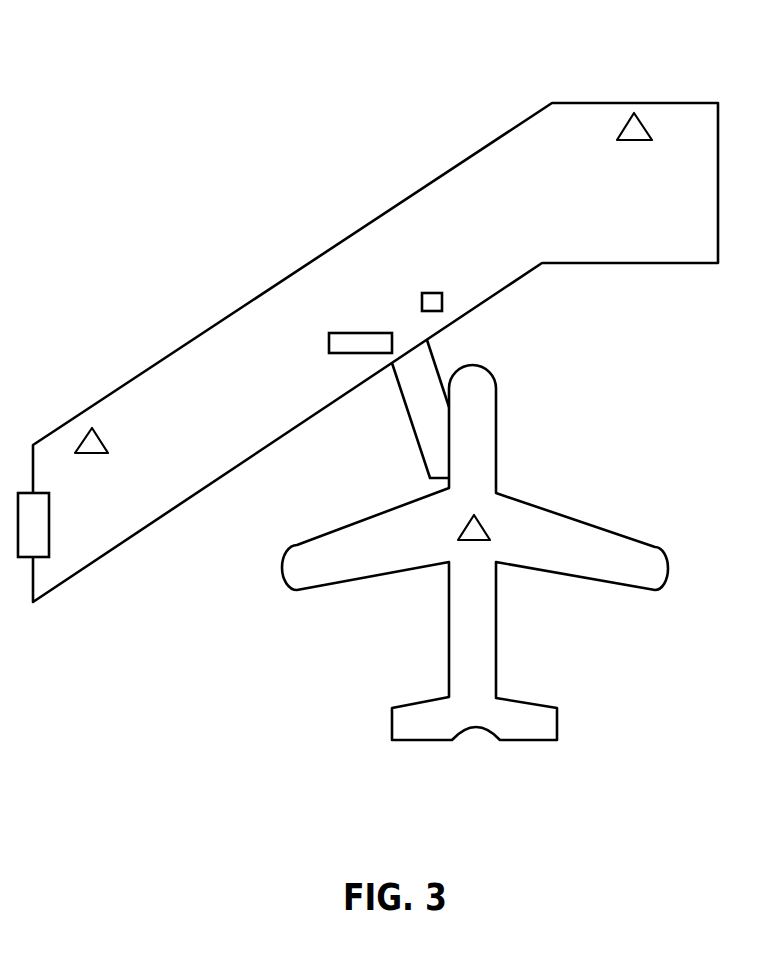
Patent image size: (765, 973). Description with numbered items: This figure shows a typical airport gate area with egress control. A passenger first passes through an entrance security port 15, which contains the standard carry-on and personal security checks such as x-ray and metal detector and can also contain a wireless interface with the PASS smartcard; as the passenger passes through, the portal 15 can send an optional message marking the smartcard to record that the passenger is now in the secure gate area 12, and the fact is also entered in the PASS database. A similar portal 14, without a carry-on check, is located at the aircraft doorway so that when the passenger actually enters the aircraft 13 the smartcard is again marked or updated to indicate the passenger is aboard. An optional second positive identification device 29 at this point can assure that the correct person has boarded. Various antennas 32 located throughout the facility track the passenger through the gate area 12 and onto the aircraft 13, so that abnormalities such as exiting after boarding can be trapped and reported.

The gate area 12 is at (142, 408).
The aircraft 13 is at (483, 415).
The portal 14 is at (352, 328).
The entrance security port 15 is at (55, 510).
The second positive identification device 29 is at (445, 298).
The antennas 32 is at (83, 430).